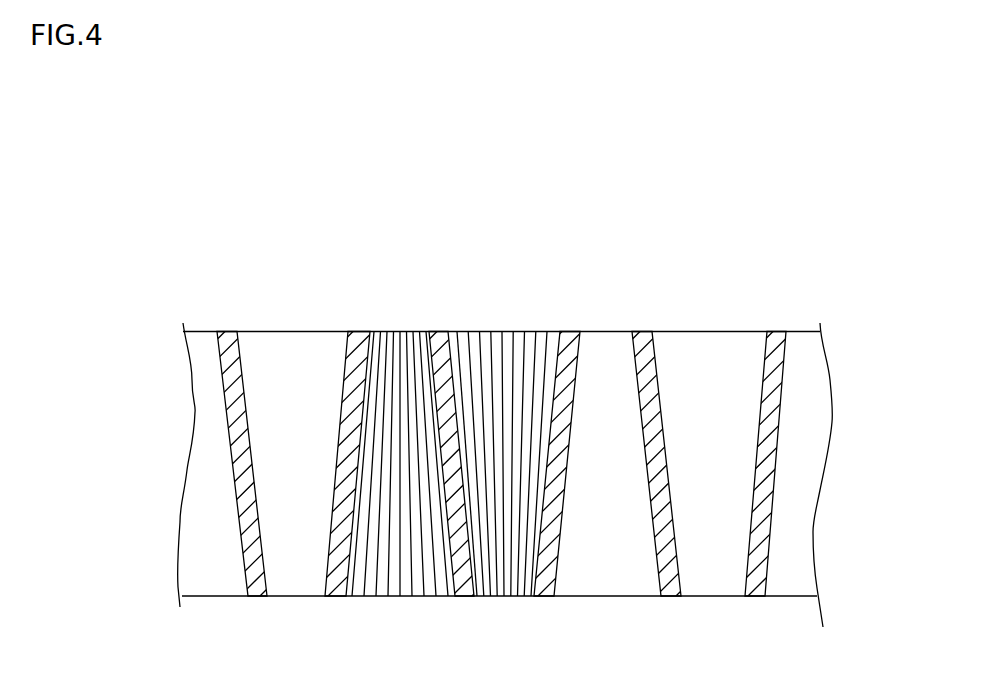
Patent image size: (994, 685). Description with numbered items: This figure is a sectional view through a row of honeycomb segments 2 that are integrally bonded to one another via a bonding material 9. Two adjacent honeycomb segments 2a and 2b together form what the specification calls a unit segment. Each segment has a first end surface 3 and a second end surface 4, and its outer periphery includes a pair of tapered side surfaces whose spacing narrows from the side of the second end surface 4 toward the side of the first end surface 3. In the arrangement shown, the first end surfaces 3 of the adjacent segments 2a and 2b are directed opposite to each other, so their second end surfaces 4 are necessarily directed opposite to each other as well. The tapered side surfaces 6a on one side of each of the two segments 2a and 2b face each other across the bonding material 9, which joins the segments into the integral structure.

The honeycomb segment 2 is at (455, 428).
The honeycomb segment 2a is at (383, 412).
The honeycomb segment 2b is at (552, 332).
The first end surface 3 is at (400, 332).
The second end surface 4 is at (513, 332).
The tapered side surface 6a is at (433, 332).
The bonding material 9 is at (455, 470).